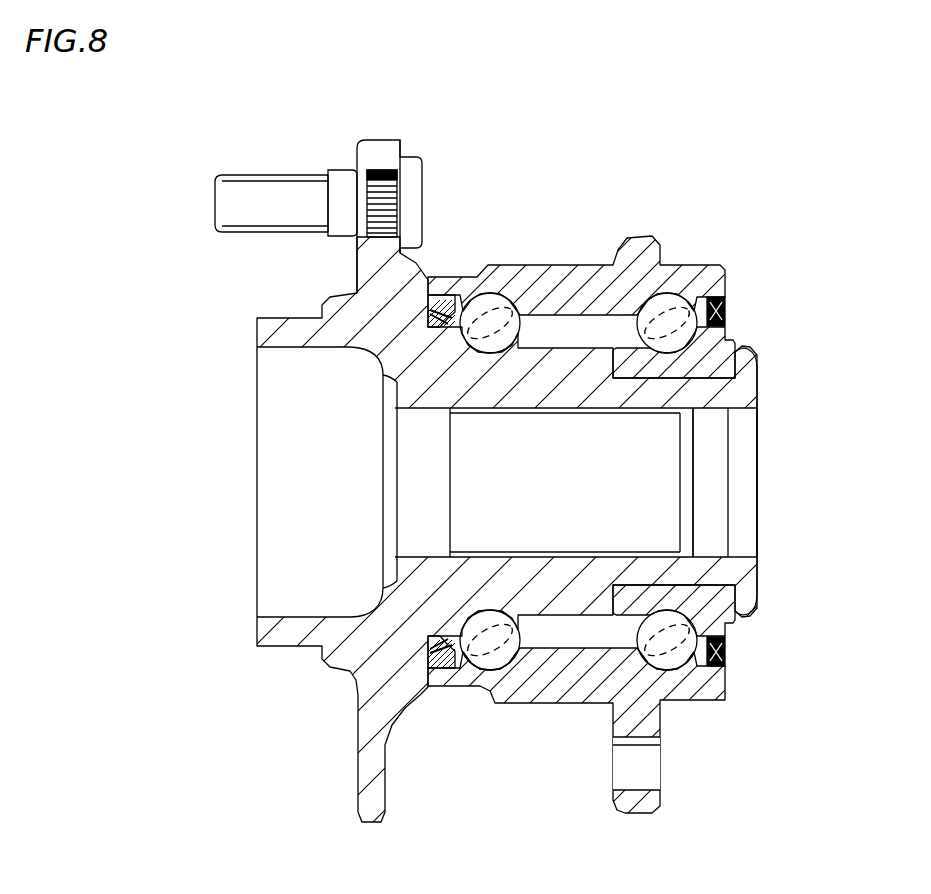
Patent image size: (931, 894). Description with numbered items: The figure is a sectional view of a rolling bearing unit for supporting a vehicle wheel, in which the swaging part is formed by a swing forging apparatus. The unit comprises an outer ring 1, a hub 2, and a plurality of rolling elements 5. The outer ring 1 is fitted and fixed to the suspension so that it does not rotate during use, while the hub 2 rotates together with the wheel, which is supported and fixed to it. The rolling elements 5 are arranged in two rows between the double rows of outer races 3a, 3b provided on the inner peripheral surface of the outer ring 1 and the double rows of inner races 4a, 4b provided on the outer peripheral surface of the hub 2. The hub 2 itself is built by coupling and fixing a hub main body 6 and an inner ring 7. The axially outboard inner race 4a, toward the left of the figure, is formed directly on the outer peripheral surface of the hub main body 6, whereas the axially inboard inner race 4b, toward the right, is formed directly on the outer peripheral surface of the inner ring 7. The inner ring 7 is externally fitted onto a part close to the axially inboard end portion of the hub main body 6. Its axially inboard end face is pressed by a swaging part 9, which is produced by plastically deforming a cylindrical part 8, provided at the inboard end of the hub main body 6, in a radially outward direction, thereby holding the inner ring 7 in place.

The outer ring 1 is at (639, 290).
The hub 2 is at (250, 327).
The outer race 3a is at (485, 672).
The outer race 3b is at (657, 662).
The inner race 4a is at (488, 611).
The inner race 4b is at (665, 611).
The rolling elements 5 is at (640, 290).
The hub main body 6 is at (397, 327).
The inner ring 7 is at (727, 340).
The cylindrical part 8 is at (712, 393).
The swaging part 9 is at (738, 361).